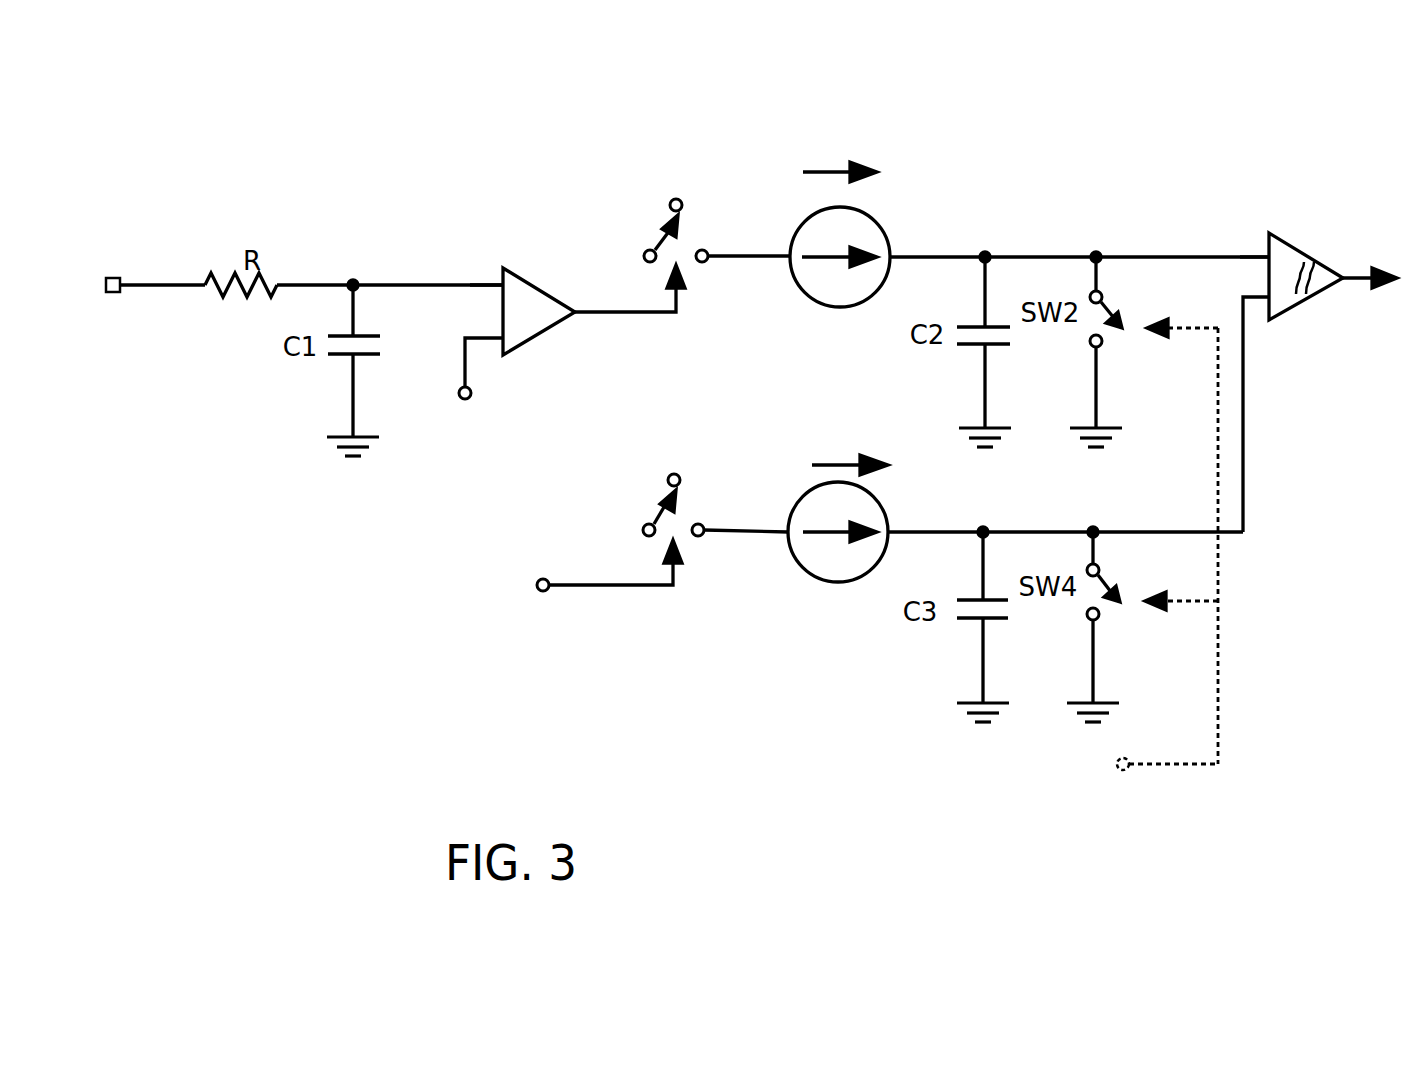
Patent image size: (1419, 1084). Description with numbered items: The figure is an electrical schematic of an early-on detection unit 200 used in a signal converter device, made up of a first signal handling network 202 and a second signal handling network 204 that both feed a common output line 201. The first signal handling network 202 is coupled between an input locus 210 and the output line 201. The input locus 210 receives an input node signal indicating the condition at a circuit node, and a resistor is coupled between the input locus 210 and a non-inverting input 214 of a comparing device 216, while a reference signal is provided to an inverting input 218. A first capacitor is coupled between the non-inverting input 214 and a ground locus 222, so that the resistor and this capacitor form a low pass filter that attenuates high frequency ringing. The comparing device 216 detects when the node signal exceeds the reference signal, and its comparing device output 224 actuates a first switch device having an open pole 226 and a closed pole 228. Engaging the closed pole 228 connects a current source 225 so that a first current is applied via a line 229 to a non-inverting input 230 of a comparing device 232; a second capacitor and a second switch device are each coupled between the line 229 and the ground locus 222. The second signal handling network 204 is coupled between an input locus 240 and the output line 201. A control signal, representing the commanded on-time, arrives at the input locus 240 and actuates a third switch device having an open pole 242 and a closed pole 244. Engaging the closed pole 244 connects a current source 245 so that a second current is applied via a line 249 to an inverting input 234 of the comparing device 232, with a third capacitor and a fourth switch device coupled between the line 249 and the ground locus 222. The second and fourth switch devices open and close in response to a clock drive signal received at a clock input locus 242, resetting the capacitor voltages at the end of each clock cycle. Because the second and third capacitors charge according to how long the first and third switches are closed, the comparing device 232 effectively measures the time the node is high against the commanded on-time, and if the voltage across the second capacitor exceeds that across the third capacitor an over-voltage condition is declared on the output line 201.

The early-on detection unit 200 is at (945, 930).
The output line 201 is at (1367, 281).
The first signal handling network 202 is at (964, 108).
The second signal handling network 204 is at (758, 675).
The input locus 210 is at (113, 277).
The non-inverting input 214 is at (498, 283).
The comparing device 216 is at (556, 300).
The inverting input 218 is at (498, 337).
The ground locus 222 is at (340, 437).
The comparing device output 224 is at (613, 316).
The current source 225 is at (897, 210).
The open pole 226 is at (685, 201).
The closed pole 228 is at (704, 263).
The line 229 is at (1032, 256).
The non-inverting input 230 is at (1262, 257).
The comparing device 232 is at (1308, 256).
The inverting input 234 is at (1255, 300).
The input locus 240 is at (543, 591).
The clock input locus 242 is at (680, 476).
The closed pole 244 is at (698, 537).
The current source 245 is at (855, 593).
The line 249 is at (1005, 530).